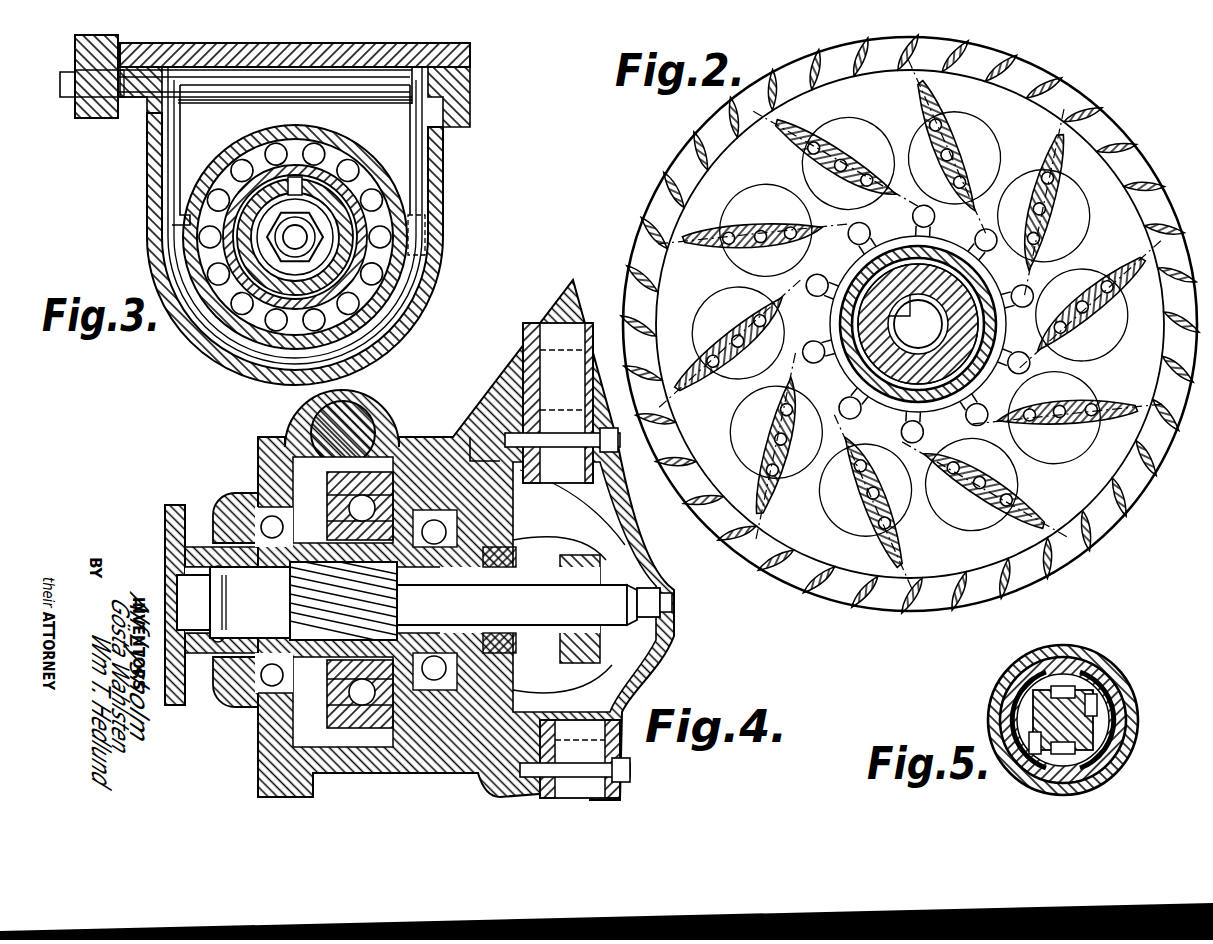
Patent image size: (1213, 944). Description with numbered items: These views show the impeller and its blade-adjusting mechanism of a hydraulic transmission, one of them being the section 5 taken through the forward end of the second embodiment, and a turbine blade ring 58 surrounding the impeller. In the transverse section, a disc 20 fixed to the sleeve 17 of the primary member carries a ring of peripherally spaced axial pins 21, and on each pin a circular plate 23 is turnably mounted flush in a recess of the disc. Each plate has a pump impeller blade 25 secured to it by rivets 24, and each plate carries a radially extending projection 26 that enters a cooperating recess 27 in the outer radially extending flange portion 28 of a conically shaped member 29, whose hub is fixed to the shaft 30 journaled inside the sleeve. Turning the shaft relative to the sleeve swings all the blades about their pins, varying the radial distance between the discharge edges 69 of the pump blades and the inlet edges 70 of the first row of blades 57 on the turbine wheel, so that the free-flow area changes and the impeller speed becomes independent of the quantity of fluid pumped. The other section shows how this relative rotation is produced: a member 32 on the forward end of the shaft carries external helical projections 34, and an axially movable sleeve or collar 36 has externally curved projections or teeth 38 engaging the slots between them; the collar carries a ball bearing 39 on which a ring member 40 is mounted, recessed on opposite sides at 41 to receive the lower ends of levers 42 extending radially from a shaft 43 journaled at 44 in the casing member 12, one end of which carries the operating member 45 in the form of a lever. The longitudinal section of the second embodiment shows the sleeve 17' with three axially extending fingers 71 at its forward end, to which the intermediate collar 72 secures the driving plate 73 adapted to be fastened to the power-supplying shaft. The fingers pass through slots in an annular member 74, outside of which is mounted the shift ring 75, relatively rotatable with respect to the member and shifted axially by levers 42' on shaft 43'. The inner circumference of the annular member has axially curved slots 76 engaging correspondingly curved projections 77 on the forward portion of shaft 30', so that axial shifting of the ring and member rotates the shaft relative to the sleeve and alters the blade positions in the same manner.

In FIG. 3, the casing member 12 is at (443, 186).
In FIG. 2, the sleeve 17 is at (892, 248).
In FIG. 4, the sleeve 17' is at (604, 605).
In FIG. 4, the disc 20 is at (530, 507).
In FIG. 2, the disc 20 is at (977, 333).
In FIG. 4, the pins 21 is at (563, 448).
In FIG. 2, the pins 21 is at (761, 411).
In FIG. 2, the circular plate 23 is at (731, 392).
In FIG. 2, the rivets 24 is at (791, 397).
In FIG. 4, the pump impeller blade 25 is at (550, 377).
In FIG. 2, the pump impeller blade 25 is at (766, 482).
In FIG. 2, the radially extending projection 26 is at (826, 351).
In FIG. 2, the recess 27 is at (894, 413).
In FIG. 2, the radially extending flange portion 28 is at (1009, 392).
In FIG. 4, the conically shaped member 29 is at (568, 545).
In FIG. 2, the conically shaped member 29 is at (972, 287).
In FIG. 2, the shaft 30 is at (910, 324).
In FIG. 4, the shaft 30' is at (406, 600).
In FIG. 3, the member 32 is at (252, 262).
In FIG. 3, the helical projections 34 is at (243, 258).
In FIG. 3, the axially movable sleeve or collar 36 is at (297, 290).
In FIG. 3, the externally curved projections or teeth 38 is at (286, 300).
In FIG. 3, the ball bearing 39 is at (258, 268).
In FIG. 3, the ring member 40 is at (366, 152).
In FIG. 3, the recesses 41 is at (178, 248).
In FIG. 3, the levers 42 is at (296, 215).
In FIG. 4, the levers 42' is at (303, 602).
In FIG. 3, the shaft 43 is at (243, 103).
In FIG. 4, the shaft 43' is at (362, 417).
In FIG. 3, the journal 44 is at (142, 100).
In FIG. 3, the operating member 45 is at (98, 118).
In FIG. 4, the section line 5 is at (311, 539).
In FIG. 2, the first row of blades 57 is at (1041, 96).
In FIG. 2, the outer rim 58 is at (1124, 150).
In FIG. 2, the discharge edges 69 is at (683, 241).
In FIG. 2, the inlet edges 70 is at (686, 207).
In FIG. 4, the fingers 71 is at (393, 593).
In FIG. 5, the fingers 71 is at (1092, 665).
In FIG. 4, the intermediate collar 72 is at (254, 573).
In FIG. 4, the driving plate 73 is at (176, 506).
In FIG. 4, the annular member 74 is at (382, 640).
In FIG. 5, the annular member 74 is at (1128, 690).
In FIG. 4, the shift ring 75 is at (404, 468).
In FIG. 5, the axially curved slots 76 is at (1025, 705).
In FIG. 4, the curved projections 77 is at (298, 612).
In FIG. 5, the curved projections 77 is at (1066, 688).